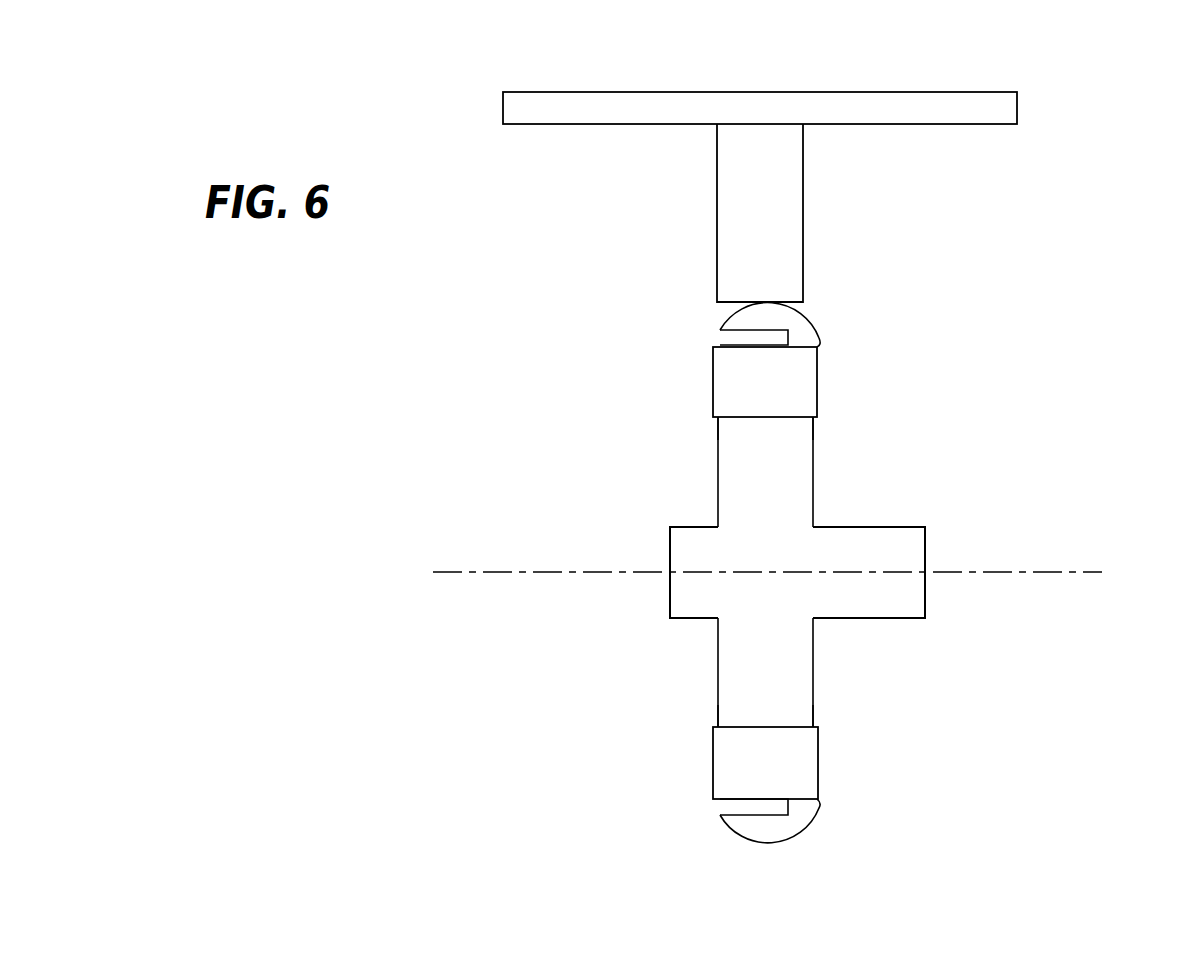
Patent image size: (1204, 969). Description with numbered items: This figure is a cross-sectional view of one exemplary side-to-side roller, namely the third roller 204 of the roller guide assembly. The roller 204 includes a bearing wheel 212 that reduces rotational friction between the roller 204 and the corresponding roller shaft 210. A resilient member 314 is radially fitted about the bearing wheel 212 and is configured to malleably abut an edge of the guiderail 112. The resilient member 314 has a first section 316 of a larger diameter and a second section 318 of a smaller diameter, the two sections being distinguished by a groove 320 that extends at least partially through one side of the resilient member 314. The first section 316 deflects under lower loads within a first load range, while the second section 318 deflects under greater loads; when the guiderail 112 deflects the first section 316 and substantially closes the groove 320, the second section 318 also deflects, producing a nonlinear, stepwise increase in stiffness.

The guiderail 112 is at (948, 106).
The third roller 204 is at (1032, 433).
The roller shaft 210 is at (903, 598).
The bearing wheel 212 is at (780, 663).
The resilient member 314 is at (748, 418).
The first section 316 is at (805, 305).
The second section 318 is at (720, 340).
The groove 320 is at (765, 338).